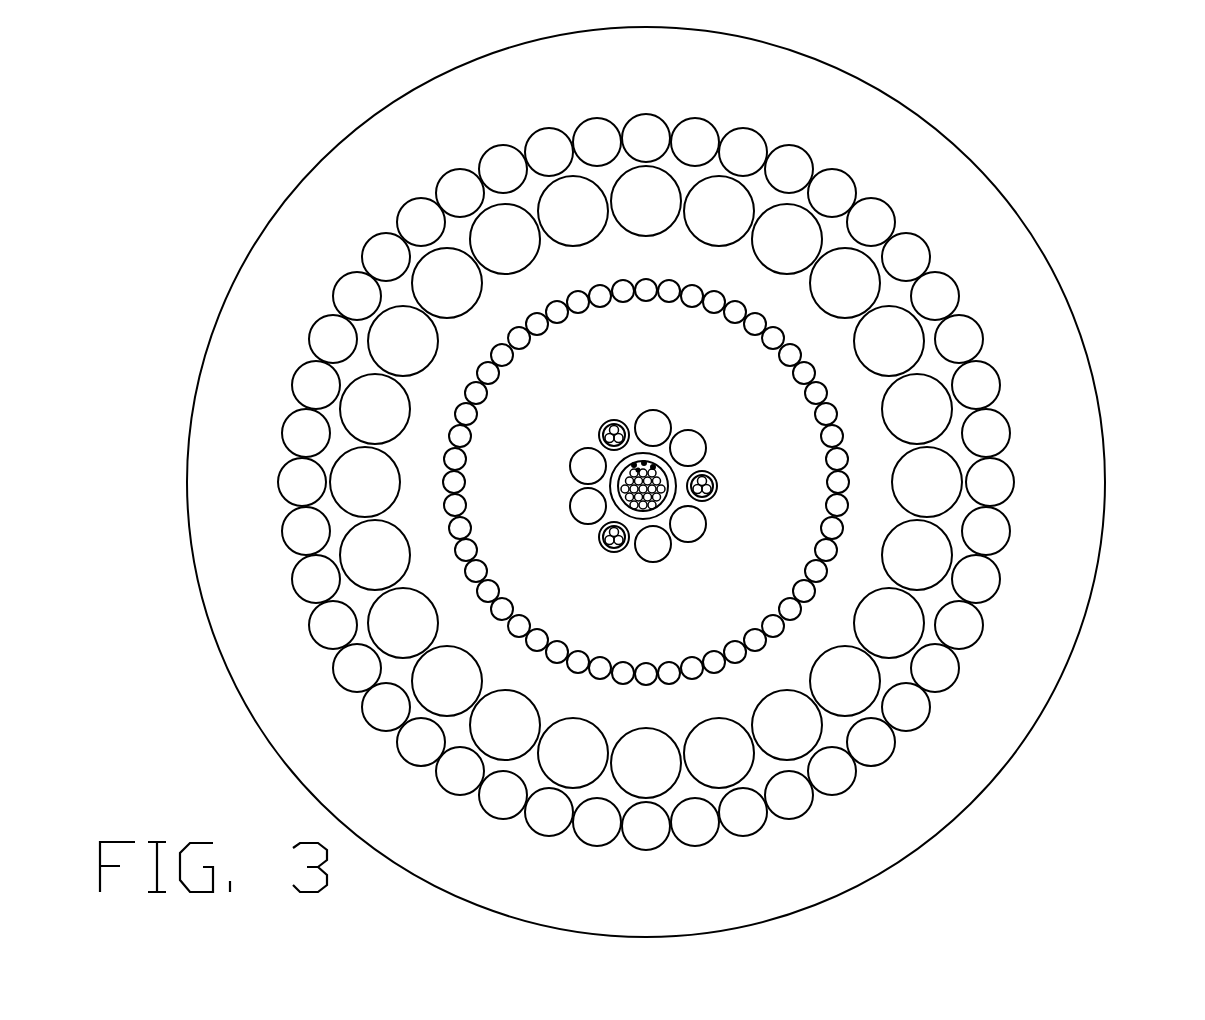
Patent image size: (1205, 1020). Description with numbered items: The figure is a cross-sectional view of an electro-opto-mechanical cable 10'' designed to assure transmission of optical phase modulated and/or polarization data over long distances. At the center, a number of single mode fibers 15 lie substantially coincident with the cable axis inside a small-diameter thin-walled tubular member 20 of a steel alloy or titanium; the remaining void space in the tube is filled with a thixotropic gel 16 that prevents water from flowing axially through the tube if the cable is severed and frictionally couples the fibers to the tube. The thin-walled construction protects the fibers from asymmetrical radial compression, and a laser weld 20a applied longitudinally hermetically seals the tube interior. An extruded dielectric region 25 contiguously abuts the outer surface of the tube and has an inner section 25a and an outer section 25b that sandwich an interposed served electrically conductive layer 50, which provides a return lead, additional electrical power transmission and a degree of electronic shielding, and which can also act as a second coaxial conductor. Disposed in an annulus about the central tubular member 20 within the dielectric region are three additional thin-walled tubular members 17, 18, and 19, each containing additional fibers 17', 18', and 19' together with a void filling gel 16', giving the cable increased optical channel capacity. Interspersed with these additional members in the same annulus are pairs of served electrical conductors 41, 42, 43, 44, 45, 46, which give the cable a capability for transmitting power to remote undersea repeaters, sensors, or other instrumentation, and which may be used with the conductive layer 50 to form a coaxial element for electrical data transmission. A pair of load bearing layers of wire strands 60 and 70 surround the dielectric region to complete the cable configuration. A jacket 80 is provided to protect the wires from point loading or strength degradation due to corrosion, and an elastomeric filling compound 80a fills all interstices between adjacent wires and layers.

The cable 10'' is at (233, 100).
The single mode fibers 15 is at (655, 507).
The thixotropic gel 16 is at (643, 436).
The void filling gel 16' is at (653, 465).
The additional thin-walled tubular member 17 is at (725, 492).
The additional fibers 17' is at (726, 481).
The additional thin-walled tubular member 18 is at (593, 428).
The additional fibers 18' is at (599, 413).
The additional thin-walled tubular member 19 is at (597, 544).
The additional fibers 19' is at (622, 556).
The thin-walled tubular member 20 is at (669, 450).
The laser weld 20a is at (672, 470).
The extruded dielectric region 25 is at (665, 641).
The inner section 25a is at (797, 427).
The outer section 25b is at (873, 510).
The served electrical conductor 41 is at (572, 504).
The served electrical conductor 42 is at (572, 460).
The served electrical conductor 43 is at (658, 413).
The served electrical conductor 44 is at (705, 442).
The served electrical conductor 45 is at (700, 530).
The served electrical conductor 46 is at (656, 560).
The served electrically conductive layer 50 is at (820, 382).
The load bearing layer of wire strands 60 is at (727, 192).
The load bearing layer of wire strands 70 is at (875, 212).
The jacket 80 is at (1040, 638).
The elastomeric filling compound 80a is at (838, 740).